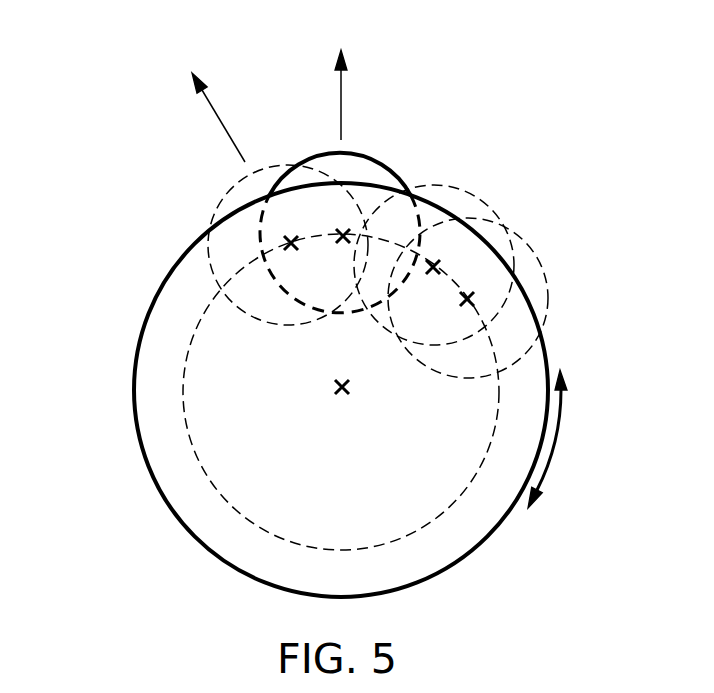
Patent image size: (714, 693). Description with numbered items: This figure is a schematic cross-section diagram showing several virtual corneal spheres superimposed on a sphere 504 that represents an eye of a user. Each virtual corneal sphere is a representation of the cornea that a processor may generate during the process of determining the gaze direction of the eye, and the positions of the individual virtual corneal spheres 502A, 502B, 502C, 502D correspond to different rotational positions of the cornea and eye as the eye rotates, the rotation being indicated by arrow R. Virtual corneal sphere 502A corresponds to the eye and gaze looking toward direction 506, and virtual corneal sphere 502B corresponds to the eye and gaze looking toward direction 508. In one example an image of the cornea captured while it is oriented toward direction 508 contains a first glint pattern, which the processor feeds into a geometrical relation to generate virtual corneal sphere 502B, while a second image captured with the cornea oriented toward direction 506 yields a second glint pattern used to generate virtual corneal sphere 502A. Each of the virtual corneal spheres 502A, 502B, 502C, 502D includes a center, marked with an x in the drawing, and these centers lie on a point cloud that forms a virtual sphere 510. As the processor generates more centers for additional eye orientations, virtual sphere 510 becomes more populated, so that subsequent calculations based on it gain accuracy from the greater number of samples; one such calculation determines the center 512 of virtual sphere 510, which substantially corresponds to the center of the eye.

The virtual corneal sphere 502A is at (374, 160).
The virtual corneal sphere 502B is at (222, 203).
The virtual corneal sphere 502C is at (466, 192).
The virtual corneal sphere 502D is at (547, 268).
The sphere representing an eye of a user 504 is at (165, 281).
The direction 506 is at (337, 84).
The direction 508 is at (206, 107).
The virtual sphere 510 is at (202, 471).
The center of virtual sphere 512 is at (336, 388).
The arrow indicating rotation R is at (557, 435).